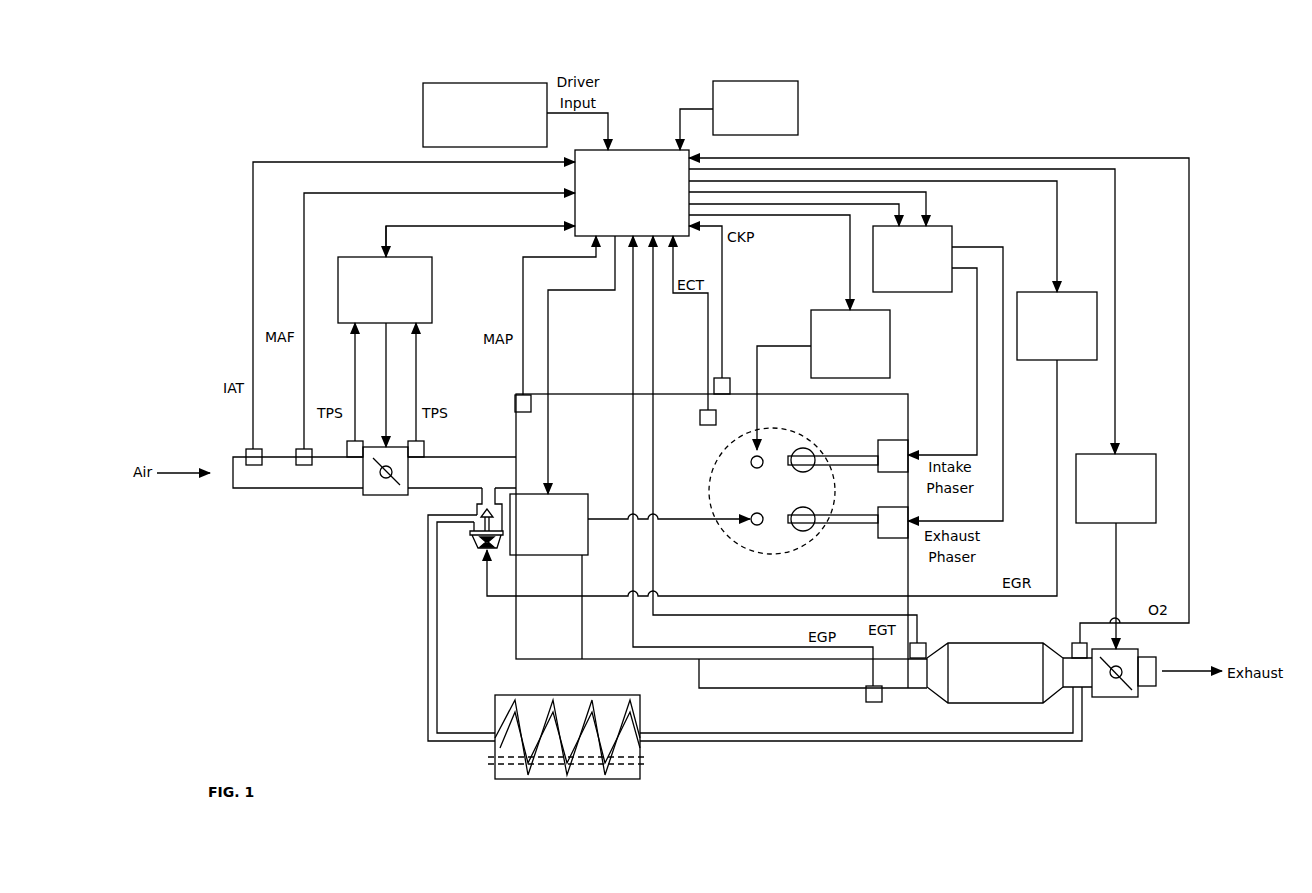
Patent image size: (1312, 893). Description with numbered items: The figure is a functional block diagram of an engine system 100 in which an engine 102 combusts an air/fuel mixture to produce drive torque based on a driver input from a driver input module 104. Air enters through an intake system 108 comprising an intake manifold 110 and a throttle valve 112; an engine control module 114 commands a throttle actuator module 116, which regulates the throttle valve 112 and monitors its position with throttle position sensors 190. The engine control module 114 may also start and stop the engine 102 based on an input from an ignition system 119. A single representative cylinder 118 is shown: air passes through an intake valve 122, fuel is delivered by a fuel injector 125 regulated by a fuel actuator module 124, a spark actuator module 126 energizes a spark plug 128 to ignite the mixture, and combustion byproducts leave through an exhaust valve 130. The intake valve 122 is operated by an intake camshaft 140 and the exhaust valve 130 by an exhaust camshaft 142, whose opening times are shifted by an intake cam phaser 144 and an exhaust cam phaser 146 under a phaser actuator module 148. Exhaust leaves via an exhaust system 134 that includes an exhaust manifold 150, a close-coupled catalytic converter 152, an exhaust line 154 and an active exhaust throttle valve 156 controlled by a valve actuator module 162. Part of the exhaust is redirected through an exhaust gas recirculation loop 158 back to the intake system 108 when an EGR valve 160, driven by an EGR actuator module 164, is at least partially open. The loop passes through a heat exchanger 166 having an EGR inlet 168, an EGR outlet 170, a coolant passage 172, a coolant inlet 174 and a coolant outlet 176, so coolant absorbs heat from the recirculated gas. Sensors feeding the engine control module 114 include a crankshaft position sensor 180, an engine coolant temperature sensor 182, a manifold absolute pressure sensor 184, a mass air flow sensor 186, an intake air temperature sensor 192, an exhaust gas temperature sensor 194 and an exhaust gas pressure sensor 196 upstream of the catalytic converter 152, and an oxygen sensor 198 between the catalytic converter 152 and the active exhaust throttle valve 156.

The engine system 100 is at (190, 60).
The engine 102 is at (908, 400).
The driver input module 104 is at (423, 114).
The intake system 108 is at (352, 589).
The intake manifold 110 is at (516, 630).
The throttle valve 112 is at (382, 496).
The engine control module 114 is at (633, 150).
The throttle actuator module 116 is at (358, 257).
The cylinder 118 is at (737, 548).
The ignition system 119 is at (798, 106).
The intake valve 122 is at (803, 448).
The fuel actuator module 124 is at (565, 556).
The fuel injector 125 is at (751, 517).
The spark actuator module 126 is at (890, 343).
The spark plug 128 is at (751, 463).
The exhaust valve 130 is at (803, 531).
The exhaust system 134 is at (1098, 783).
The intake camshaft 140 is at (846, 432).
The exhaust camshaft 142 is at (820, 525).
The intake cam phaser 144 is at (893, 440).
The exhaust cam phaser 146 is at (893, 539).
The phaser actuator module 148 is at (952, 236).
The exhaust manifold 150 is at (812, 688).
The catalytic converter 152 is at (997, 703).
The exhaust line 154 is at (1148, 686).
The active exhaust throttle valve 156 is at (1116, 697).
The exhaust gas recirculation loop 158 is at (800, 742).
The EGR valve 160 is at (485, 598).
The valve actuator module 162 is at (1133, 523).
The EGR actuator module 164 is at (1062, 361).
The heat exchanger 166 is at (573, 779).
The EGR inlet 168 is at (640, 735).
The EGR outlet 170 is at (495, 735).
The coolant passage 172 is at (545, 767).
The coolant inlet 174 is at (640, 765).
The coolant outlet 176 is at (495, 765).
The crankshaft position sensor 180 is at (727, 378).
The engine coolant temperature sensor 182 is at (708, 425).
The manifold absolute pressure sensor 184 is at (516, 395).
The mass air flow sensor 186 is at (297, 465).
The throttle position sensor 190 is at (352, 458).
The intake air temperature sensor 192 is at (246, 452).
The exhaust gas temperature sensor 194 is at (925, 643).
The exhaust gas pressure sensor 196 is at (875, 702).
The oxygen sensor 198 is at (1075, 643).